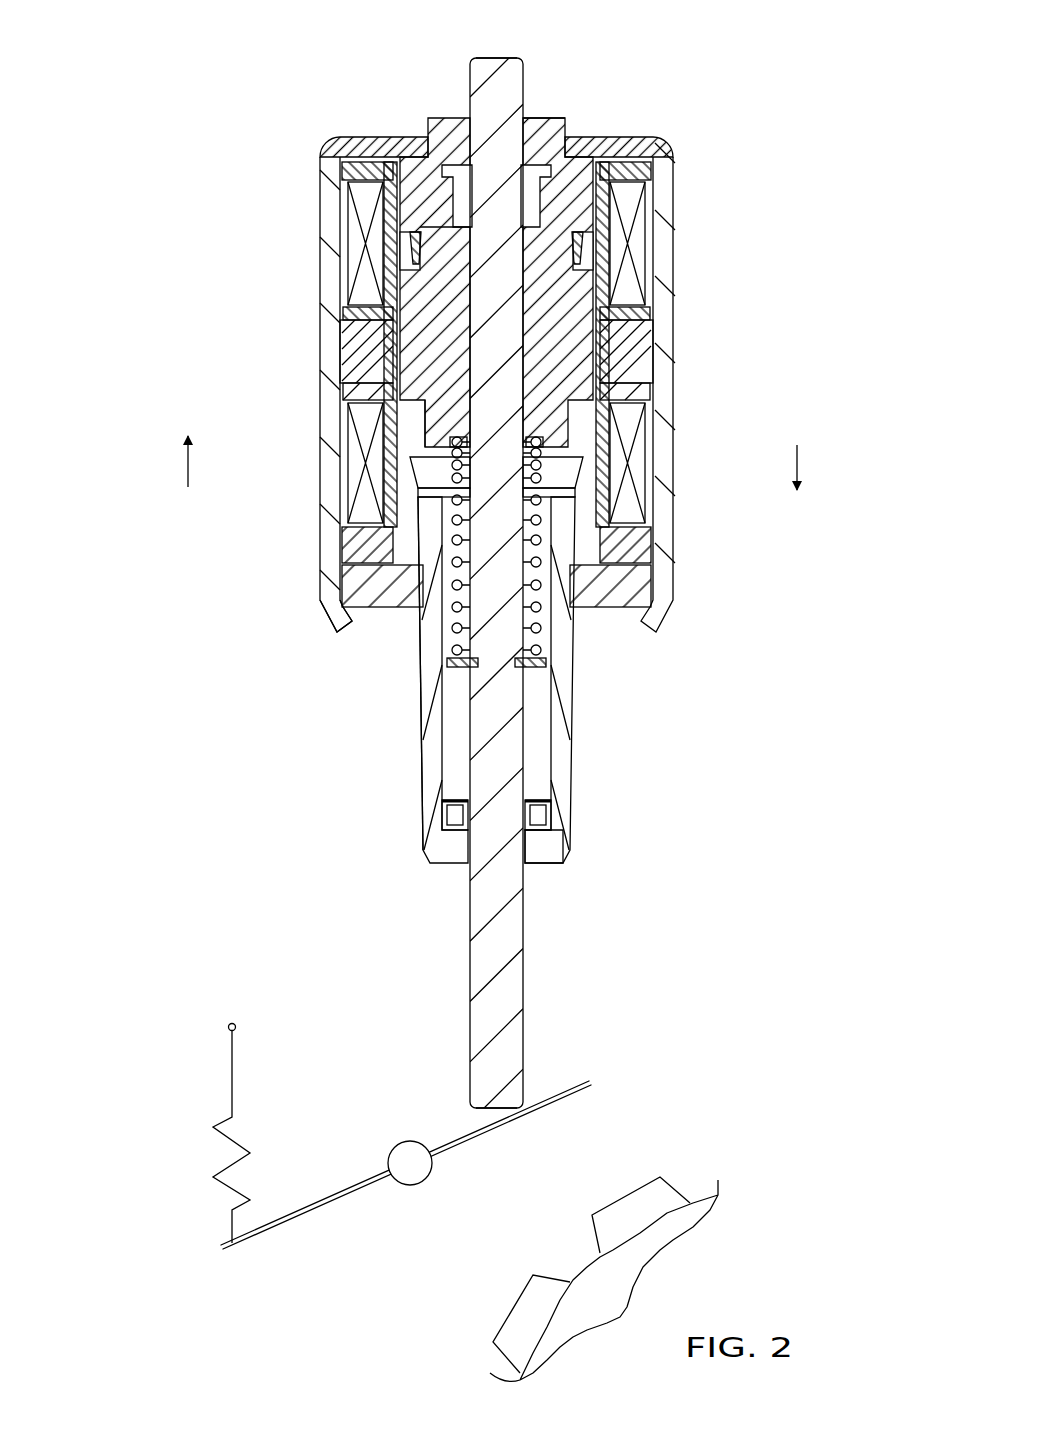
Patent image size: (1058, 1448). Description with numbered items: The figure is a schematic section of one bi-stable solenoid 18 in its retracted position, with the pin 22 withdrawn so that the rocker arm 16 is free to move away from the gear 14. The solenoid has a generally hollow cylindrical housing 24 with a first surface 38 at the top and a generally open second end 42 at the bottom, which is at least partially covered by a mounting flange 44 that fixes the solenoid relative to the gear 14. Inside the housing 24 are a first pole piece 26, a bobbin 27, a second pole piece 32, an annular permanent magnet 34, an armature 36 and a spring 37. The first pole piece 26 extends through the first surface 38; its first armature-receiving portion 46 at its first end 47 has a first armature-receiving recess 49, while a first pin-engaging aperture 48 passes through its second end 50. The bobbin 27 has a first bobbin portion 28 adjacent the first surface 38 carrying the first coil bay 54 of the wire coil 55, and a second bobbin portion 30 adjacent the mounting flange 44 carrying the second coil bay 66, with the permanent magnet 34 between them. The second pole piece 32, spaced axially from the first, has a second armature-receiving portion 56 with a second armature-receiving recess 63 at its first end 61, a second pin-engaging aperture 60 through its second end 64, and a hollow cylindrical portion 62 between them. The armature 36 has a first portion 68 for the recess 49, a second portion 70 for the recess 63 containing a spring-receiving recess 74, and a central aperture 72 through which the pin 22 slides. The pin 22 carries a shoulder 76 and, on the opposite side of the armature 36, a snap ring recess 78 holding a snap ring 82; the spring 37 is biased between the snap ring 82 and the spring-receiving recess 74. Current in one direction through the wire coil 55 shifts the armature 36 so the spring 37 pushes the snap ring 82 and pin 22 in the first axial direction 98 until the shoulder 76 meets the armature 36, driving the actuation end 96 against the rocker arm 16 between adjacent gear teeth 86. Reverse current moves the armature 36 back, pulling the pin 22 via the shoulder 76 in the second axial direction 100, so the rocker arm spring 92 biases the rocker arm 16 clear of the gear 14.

The gear 14 is at (698, 1197).
The rocker arm 16 is at (528, 1118).
The bi-stable solenoid 18 is at (697, 44).
The pin 22 is at (510, 941).
The housing 24 is at (674, 262).
The first pole piece 26 is at (650, 165).
The bobbin 27 is at (352, 172).
The first bobbin portion 28 is at (648, 170).
The second bobbin portion 30 is at (628, 540).
The second pole piece 32 is at (428, 545).
The permanent magnet 34 is at (356, 350).
The armature 36 is at (424, 305).
The spring 37 is at (452, 643).
The first surface 38 is at (380, 135).
The open second end 42 is at (352, 636).
The mounting flange 44 is at (366, 583).
The first armature-receiving portion 46 is at (577, 250).
The first end 47 is at (405, 252).
The first pin-engaging aperture 48 is at (505, 118).
The first armature-receiving recess 49 is at (440, 218).
The second end 50 is at (578, 110).
The first coil bay 54 is at (356, 230).
The wire coil 55 is at (654, 205).
The second armature-receiving portion 56 is at (418, 446).
The second pin-engaging aperture 60 is at (476, 852).
The first end 61 is at (410, 462).
The hollow cylindrical portion 62 is at (582, 718).
The second armature-receiving recess 63 is at (568, 487).
The second end 64 is at (588, 852).
The second coil bay 66 is at (636, 466).
The first portion 68 is at (443, 225).
The second portion 70 is at (430, 416).
The central aperture 72 is at (605, 345).
The spring-receiving recess 74 is at (598, 372).
The shoulder 76 is at (578, 170).
The snap ring recess 78 is at (527, 667).
The snap ring 82 is at (460, 668).
The gear teeth 86 is at (630, 1208).
The rocker arm spring 92 is at (232, 1136).
The actuation end 96 is at (477, 1112).
The first axial direction 98 is at (797, 445).
The second axial direction 100 is at (188, 462).